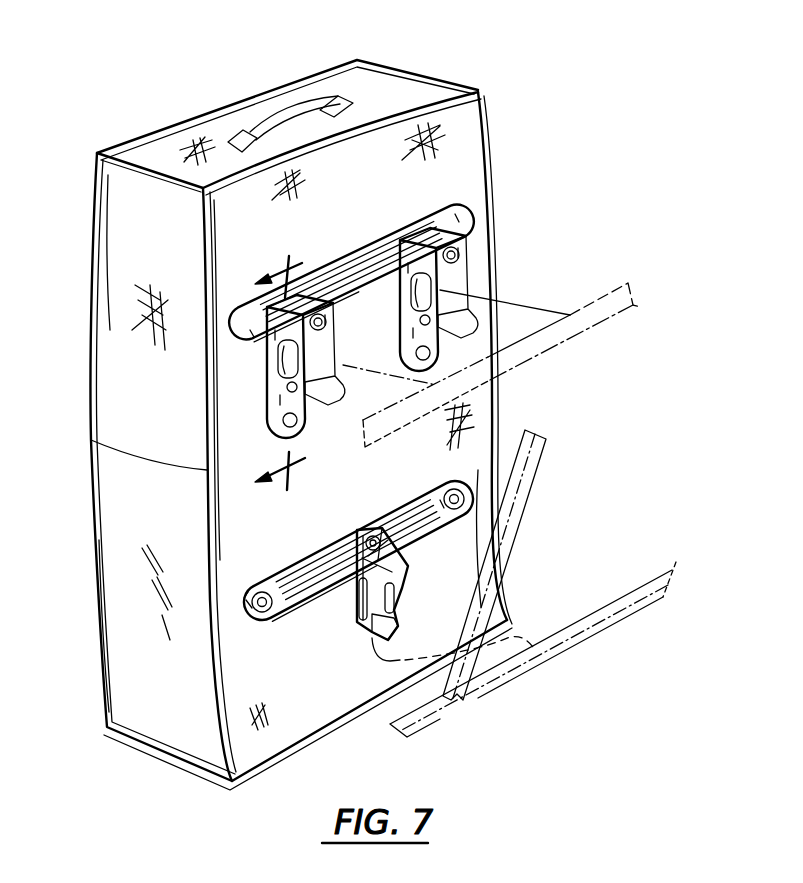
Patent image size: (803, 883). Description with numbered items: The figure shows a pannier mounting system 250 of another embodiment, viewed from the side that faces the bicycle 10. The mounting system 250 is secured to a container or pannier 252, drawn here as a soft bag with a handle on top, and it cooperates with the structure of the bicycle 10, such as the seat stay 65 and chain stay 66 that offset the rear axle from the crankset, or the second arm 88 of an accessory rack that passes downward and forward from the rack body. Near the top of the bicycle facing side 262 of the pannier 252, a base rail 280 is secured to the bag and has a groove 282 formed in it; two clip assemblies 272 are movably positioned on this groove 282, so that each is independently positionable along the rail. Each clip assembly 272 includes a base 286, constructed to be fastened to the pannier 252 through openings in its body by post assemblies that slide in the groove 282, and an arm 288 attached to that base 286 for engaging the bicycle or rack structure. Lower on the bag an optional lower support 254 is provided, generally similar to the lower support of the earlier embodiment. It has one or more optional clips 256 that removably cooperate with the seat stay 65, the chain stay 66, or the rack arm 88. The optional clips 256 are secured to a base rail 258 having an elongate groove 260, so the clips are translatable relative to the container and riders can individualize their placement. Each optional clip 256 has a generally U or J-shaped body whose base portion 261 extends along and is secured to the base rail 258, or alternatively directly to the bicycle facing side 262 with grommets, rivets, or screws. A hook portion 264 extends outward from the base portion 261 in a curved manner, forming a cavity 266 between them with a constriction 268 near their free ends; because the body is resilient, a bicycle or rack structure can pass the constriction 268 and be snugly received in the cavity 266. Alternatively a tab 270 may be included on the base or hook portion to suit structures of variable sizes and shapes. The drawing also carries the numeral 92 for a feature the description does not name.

The bicycle 10 is at (275, 380).
The seat stay 65 is at (516, 536).
The chain stay 66 is at (627, 611).
The second arm 88 is at (594, 299).
The support member 92 is at (553, 343).
The mounting system 250 is at (620, 72).
The pannier 252 is at (410, 78).
The optional lower support 254 is at (283, 108).
The optional clip 256 is at (411, 584).
The base rail 258 is at (273, 613).
The elongate groove 260 is at (351, 579).
The base portion 261 is at (362, 624).
The bicycle facing side 262 is at (218, 224).
The hook portion 264 is at (393, 616).
The cavity 266 is at (347, 600).
The constriction 268 is at (355, 673).
The tab 270 is at (353, 333).
The clip assembly 272 is at (544, 197).
The base rail 280 is at (351, 262).
The groove 282 is at (338, 290).
The base 286 is at (267, 405).
The arm 288 is at (331, 335).